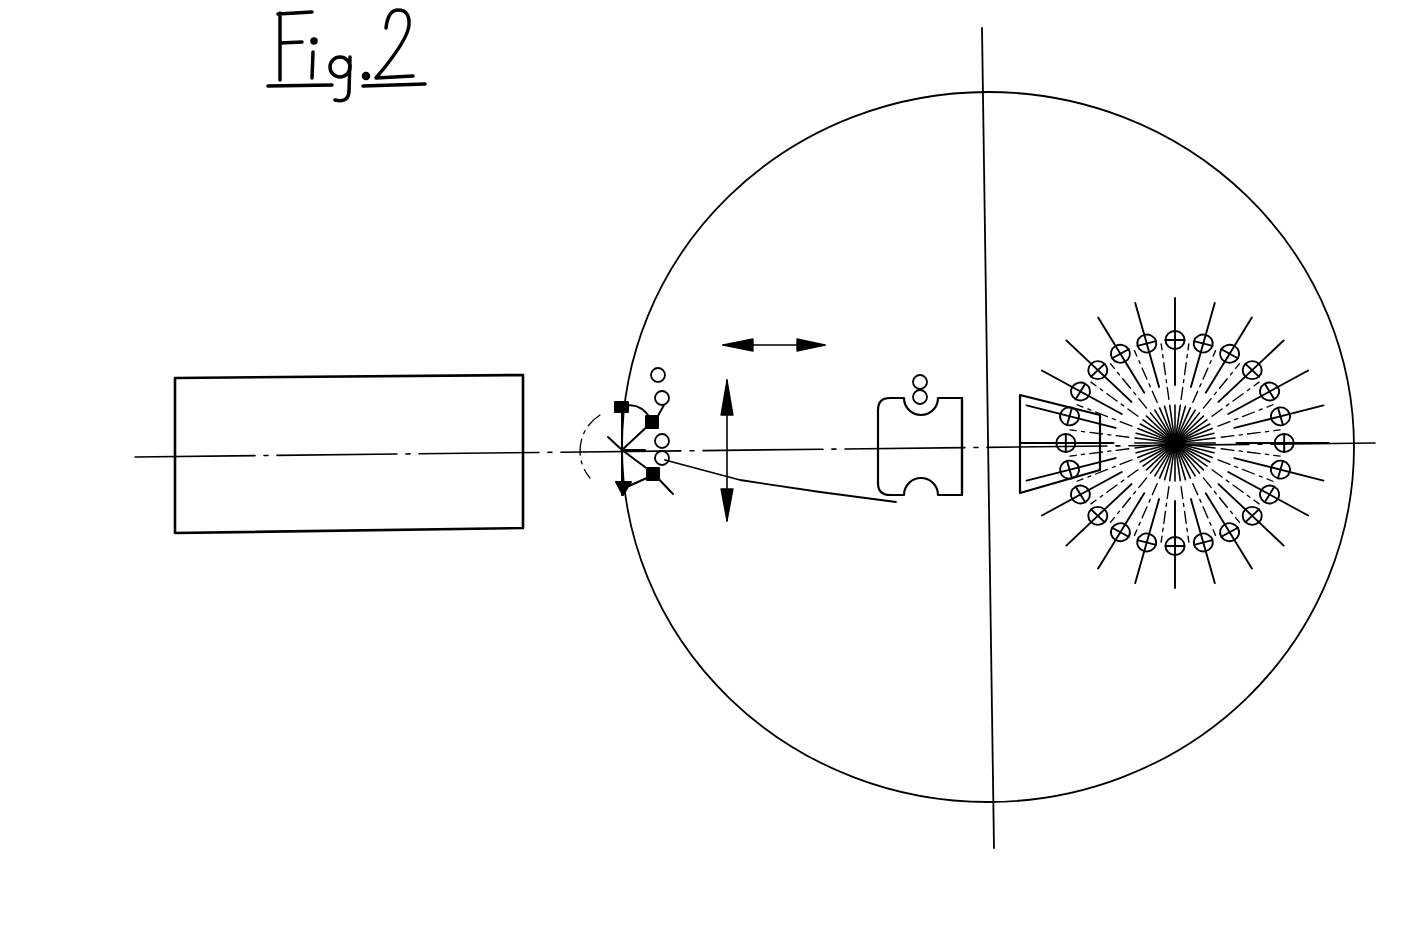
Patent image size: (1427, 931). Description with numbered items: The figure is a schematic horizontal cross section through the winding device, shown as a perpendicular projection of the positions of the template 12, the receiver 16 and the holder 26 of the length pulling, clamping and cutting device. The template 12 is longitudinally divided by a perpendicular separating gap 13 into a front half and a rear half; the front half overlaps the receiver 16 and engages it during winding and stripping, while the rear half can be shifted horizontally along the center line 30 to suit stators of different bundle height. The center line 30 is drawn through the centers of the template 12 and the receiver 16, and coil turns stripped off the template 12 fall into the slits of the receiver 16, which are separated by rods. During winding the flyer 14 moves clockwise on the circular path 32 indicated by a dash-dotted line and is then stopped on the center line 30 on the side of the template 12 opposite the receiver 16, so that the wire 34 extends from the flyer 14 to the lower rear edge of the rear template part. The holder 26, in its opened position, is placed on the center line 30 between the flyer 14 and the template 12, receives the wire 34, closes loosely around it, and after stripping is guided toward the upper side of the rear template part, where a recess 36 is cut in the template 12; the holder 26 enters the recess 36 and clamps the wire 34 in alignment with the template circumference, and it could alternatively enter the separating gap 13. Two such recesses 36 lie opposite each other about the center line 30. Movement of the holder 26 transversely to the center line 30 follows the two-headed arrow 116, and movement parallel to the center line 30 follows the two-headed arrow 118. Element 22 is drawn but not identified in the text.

The template 12 is at (957, 415).
The separating gap 13 is at (1002, 480).
The flyer 14 is at (622, 450).
The receiver 16 is at (1138, 548).
The laser light source 22 is at (427, 513).
The holder 26 is at (665, 463).
The center line 30 is at (1323, 442).
The circular path 32 is at (1267, 215).
The wire 34 is at (833, 492).
The recess 36 is at (933, 403).
The two-headed arrow 116 is at (730, 438).
The two-headed arrow 118 is at (768, 342).